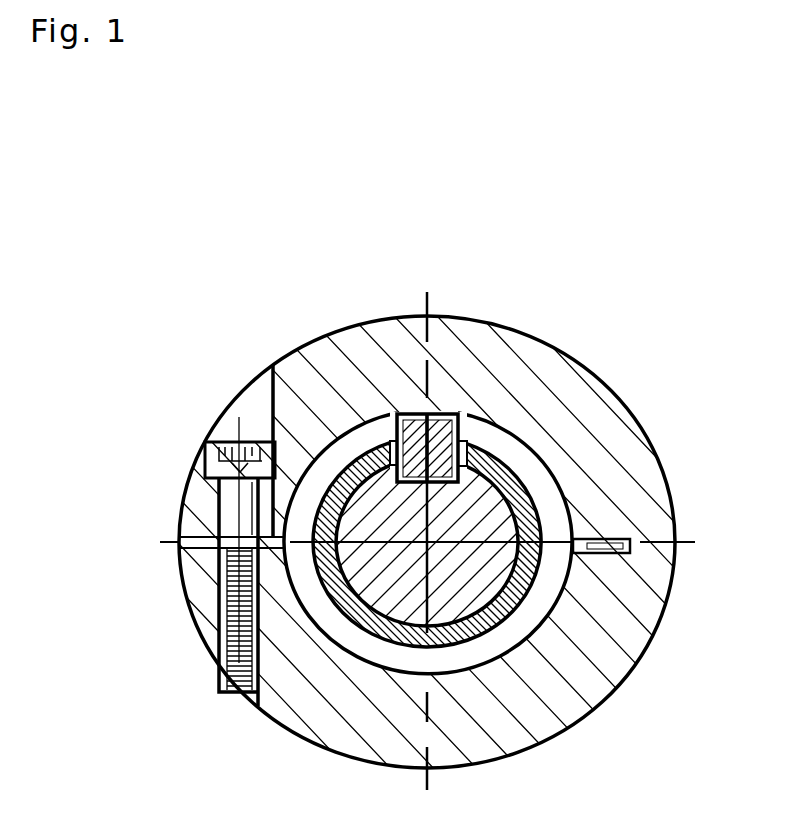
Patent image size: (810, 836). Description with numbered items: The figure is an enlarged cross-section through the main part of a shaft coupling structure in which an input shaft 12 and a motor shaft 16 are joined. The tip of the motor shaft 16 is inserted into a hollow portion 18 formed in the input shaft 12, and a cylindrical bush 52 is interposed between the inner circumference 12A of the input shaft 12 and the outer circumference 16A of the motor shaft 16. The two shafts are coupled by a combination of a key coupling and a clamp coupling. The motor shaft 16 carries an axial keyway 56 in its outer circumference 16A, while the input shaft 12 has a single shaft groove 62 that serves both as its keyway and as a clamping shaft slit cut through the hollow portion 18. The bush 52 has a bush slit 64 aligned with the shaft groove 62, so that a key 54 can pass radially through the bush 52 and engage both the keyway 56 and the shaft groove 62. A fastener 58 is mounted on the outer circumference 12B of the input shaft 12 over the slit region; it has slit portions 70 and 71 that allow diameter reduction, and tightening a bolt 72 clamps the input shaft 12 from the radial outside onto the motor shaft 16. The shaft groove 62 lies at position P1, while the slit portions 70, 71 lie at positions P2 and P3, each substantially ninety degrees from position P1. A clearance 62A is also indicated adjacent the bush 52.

The input shaft 12 is at (522, 480).
The inner circumference of the input shaft 12A is at (556, 520).
The outer circumference of the input shaft 12B is at (576, 528).
The motor shaft 16 is at (495, 577).
The outer circumference of the motor shaft 16A is at (475, 617).
The hollow portion 18 is at (603, 703).
The bush 52 is at (582, 528).
The key 54 is at (487, 418).
The keyway 56 is at (412, 475).
The fastener 58 is at (346, 326).
The shaft groove 62 is at (427, 412).
The clearance 62A is at (338, 648).
The bush slit 64 is at (513, 450).
The slit portion 70 is at (200, 547).
The slit portion 71 is at (632, 551).
The bolt 72 is at (207, 456).
The position of the shaft groove P1 is at (443, 414).
The position of the slit portion P2 is at (293, 590).
The position of the slit portion P3 is at (575, 553).